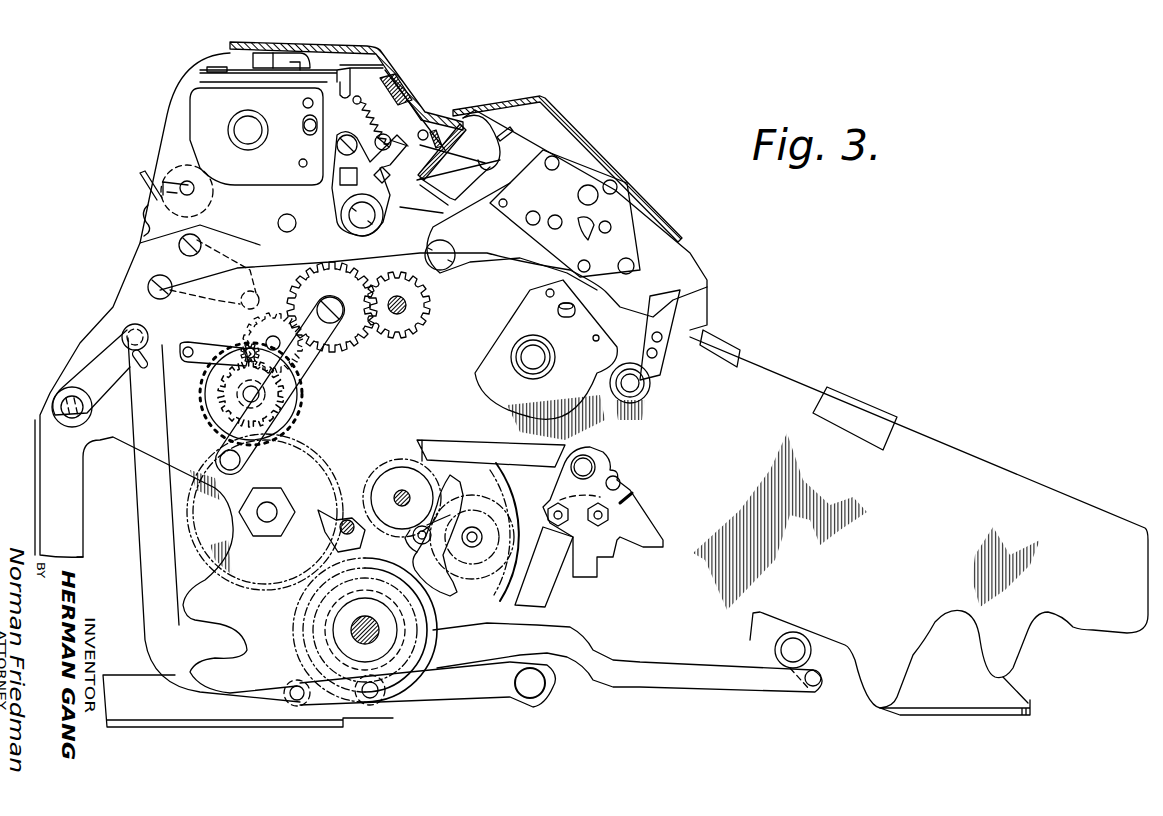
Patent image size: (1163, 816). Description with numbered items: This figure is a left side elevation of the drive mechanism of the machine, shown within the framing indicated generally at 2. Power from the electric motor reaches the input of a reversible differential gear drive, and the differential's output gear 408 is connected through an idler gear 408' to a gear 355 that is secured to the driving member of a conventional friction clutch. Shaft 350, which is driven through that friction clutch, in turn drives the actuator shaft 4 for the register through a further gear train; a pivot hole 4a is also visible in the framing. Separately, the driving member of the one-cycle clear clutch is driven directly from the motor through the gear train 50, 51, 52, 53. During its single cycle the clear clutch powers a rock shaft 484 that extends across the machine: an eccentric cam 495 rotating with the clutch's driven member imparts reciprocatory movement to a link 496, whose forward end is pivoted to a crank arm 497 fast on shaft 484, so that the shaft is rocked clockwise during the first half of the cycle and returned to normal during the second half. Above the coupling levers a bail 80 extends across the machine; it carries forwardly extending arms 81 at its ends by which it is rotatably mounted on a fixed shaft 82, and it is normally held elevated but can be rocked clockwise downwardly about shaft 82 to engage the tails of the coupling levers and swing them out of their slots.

The typewriter frame assembly 2 is at (461, 98).
The actuator shaft 4 is at (637, 383).
The pivot hole 4a is at (297, 228).
The gear of gear train 50 is at (413, 527).
The gear of gear train 51 is at (425, 440).
The gear of gear train 52 is at (335, 542).
The gear of gear train 53 is at (300, 606).
The bail 80 is at (158, 188).
The forwardly extending arms 81 is at (148, 226).
The fixed shaft 82 is at (243, 306).
The shaft 350 is at (258, 390).
The gear 355 is at (298, 402).
The output gear 408 is at (265, 512).
The idler gear 408' is at (349, 462).
The rock shaft 484 is at (795, 648).
The eccentric cam 495 is at (420, 643).
The link 496 is at (668, 688).
The crank arm 497 is at (820, 666).